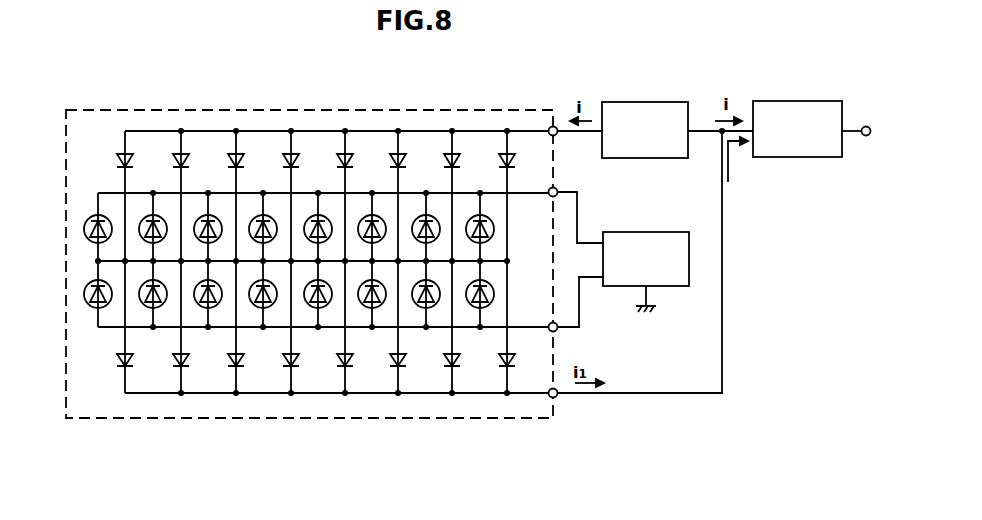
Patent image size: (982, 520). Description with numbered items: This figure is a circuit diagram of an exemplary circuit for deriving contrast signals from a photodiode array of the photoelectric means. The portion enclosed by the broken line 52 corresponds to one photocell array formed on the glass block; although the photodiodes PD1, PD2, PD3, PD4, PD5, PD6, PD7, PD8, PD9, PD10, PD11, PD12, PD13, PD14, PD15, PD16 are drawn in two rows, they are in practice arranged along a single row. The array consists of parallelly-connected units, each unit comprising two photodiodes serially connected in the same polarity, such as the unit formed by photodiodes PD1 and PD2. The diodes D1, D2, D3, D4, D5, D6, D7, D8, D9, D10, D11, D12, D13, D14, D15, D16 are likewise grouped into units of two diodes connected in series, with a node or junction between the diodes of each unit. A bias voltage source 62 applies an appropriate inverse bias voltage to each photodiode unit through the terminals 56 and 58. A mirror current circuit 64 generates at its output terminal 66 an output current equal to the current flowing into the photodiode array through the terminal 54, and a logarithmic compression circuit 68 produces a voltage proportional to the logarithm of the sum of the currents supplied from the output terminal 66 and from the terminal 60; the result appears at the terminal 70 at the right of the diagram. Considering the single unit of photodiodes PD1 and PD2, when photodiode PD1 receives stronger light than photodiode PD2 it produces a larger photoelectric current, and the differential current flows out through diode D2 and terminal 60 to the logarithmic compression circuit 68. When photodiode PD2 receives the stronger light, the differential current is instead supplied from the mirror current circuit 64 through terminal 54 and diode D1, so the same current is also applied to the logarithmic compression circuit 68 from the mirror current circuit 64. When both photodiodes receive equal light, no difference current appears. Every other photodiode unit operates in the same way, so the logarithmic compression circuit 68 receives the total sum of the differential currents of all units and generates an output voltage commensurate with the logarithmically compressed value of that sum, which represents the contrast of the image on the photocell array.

The broken line 52 is at (290, 269).
The terminal 54 is at (554, 126).
The terminal 56 is at (556, 189).
The terminal 58 is at (556, 329).
The terminal 60 is at (556, 396).
The bias voltage source 62 is at (648, 232).
The mirror current circuit 64 is at (646, 102).
The output terminal 66 is at (690, 126).
The logarithmic compression circuit 68 is at (783, 101).
The output terminal 70 is at (858, 96).
The diode D1 is at (120, 158).
The diode D2 is at (123, 368).
The diode D3 is at (176, 158).
The diode D4 is at (179, 368).
The diode D5 is at (231, 158).
The diode D6 is at (234, 368).
The diode D7 is at (286, 158).
The diode D8 is at (289, 368).
The diode D9 is at (340, 158).
The diode D10 is at (343, 368).
The diode D11 is at (393, 158).
The diode D12 is at (396, 368).
The diode D13 is at (447, 158).
The diode D14 is at (450, 368).
The diode D15 is at (502, 158).
The diode D16 is at (505, 368).
The photodiode PD1 is at (92, 217).
The photodiode PD2 is at (92, 312).
The photodiode PD3 is at (147, 217).
The photodiode PD4 is at (147, 312).
The photodiode PD5 is at (202, 217).
The photodiode PD6 is at (202, 312).
The photodiode PD7 is at (257, 217).
The photodiode PD8 is at (257, 312).
The photodiode PD9 is at (312, 217).
The photodiode PD10 is at (312, 312).
The photodiode PD11 is at (366, 217).
The photodiode PD12 is at (366, 312).
The photodiode PD13 is at (420, 217).
The photodiode PD14 is at (420, 312).
The photodiode PD15 is at (474, 217).
The photodiode PD16 is at (474, 312).